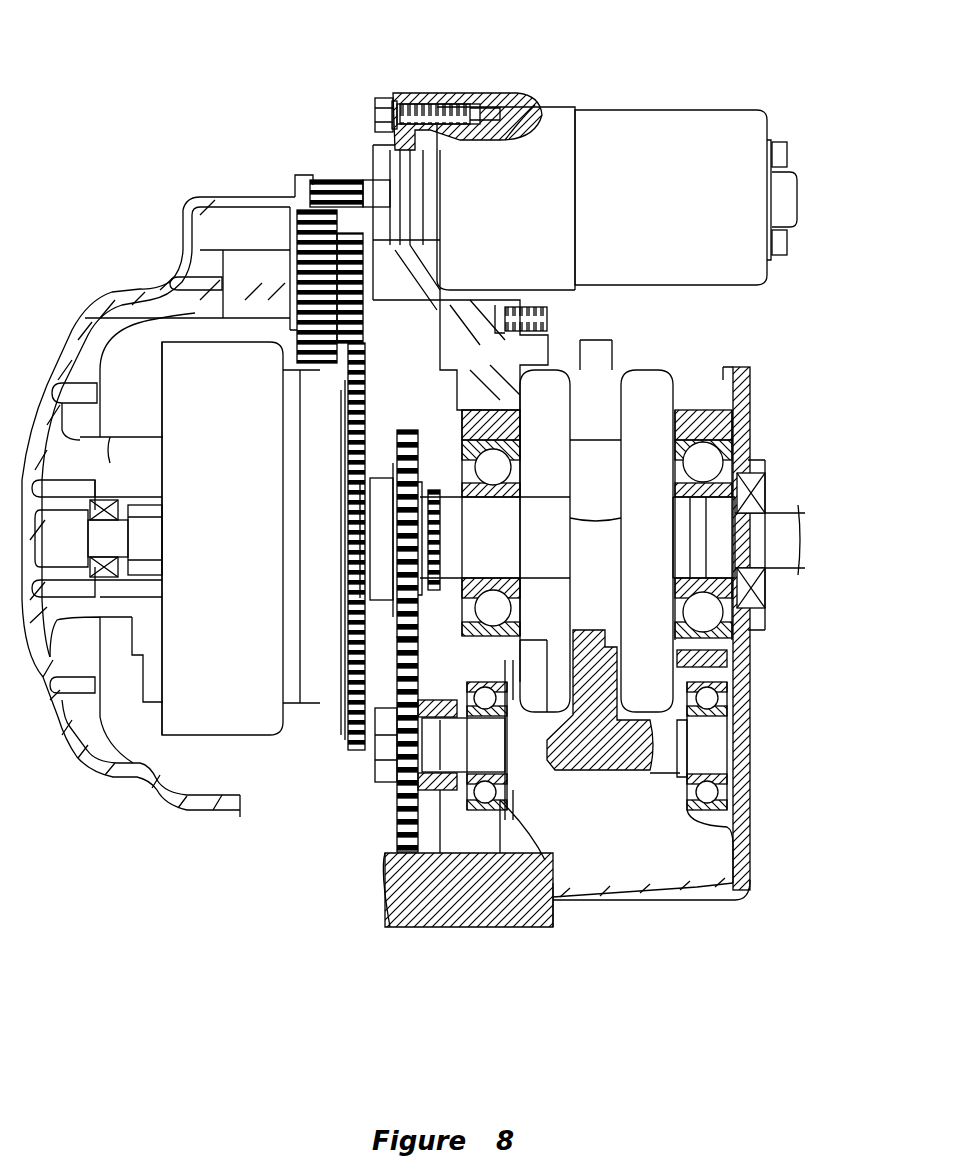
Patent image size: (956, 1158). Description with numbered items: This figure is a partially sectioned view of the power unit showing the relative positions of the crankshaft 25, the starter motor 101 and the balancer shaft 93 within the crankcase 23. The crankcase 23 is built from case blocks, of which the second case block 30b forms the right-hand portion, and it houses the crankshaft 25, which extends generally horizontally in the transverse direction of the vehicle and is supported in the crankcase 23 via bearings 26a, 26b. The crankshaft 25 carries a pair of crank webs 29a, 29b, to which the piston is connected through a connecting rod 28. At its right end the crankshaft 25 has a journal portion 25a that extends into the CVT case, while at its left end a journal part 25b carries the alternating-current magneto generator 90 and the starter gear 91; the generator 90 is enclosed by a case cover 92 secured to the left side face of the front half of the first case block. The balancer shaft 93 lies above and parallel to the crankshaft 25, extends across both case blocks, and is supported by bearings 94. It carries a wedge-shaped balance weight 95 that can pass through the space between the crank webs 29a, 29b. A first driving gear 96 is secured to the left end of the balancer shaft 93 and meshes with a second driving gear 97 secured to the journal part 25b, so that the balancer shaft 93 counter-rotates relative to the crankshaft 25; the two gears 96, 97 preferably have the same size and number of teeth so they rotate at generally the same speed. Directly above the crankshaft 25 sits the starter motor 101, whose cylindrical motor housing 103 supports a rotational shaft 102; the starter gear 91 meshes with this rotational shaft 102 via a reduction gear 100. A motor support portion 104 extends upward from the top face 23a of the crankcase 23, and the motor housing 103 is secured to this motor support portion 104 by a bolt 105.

The case cover 92 is at (118, 305).
The reduction gear 100 is at (300, 230).
The rotational shaft 102 is at (340, 235).
The bolt 105 is at (385, 105).
The motor support portion 104 is at (420, 100).
The motor housing 103 is at (505, 100).
The starter motor 101 is at (663, 105).
The top face 23a is at (465, 290).
The crank web 29a is at (550, 395).
The connecting rod 28 is at (595, 345).
The crank web 29b is at (650, 380).
The crankshaft 25 is at (688, 510).
The journal portion 25a is at (780, 543).
The second driving gear 97 is at (393, 435).
The journal part 25b is at (450, 522).
The balance weight 95 is at (590, 632).
The bearing 26b is at (720, 633).
The alternating-current magneto generator 90 is at (222, 705).
The starter gear 91 is at (350, 705).
The bearing 26a is at (470, 640).
The first driving gear 96 is at (395, 810).
The balancer shaft 93 is at (528, 755).
The bearings 94 is at (707, 796).
The second case block 30b is at (515, 905).
The crankcase 23 is at (680, 998).